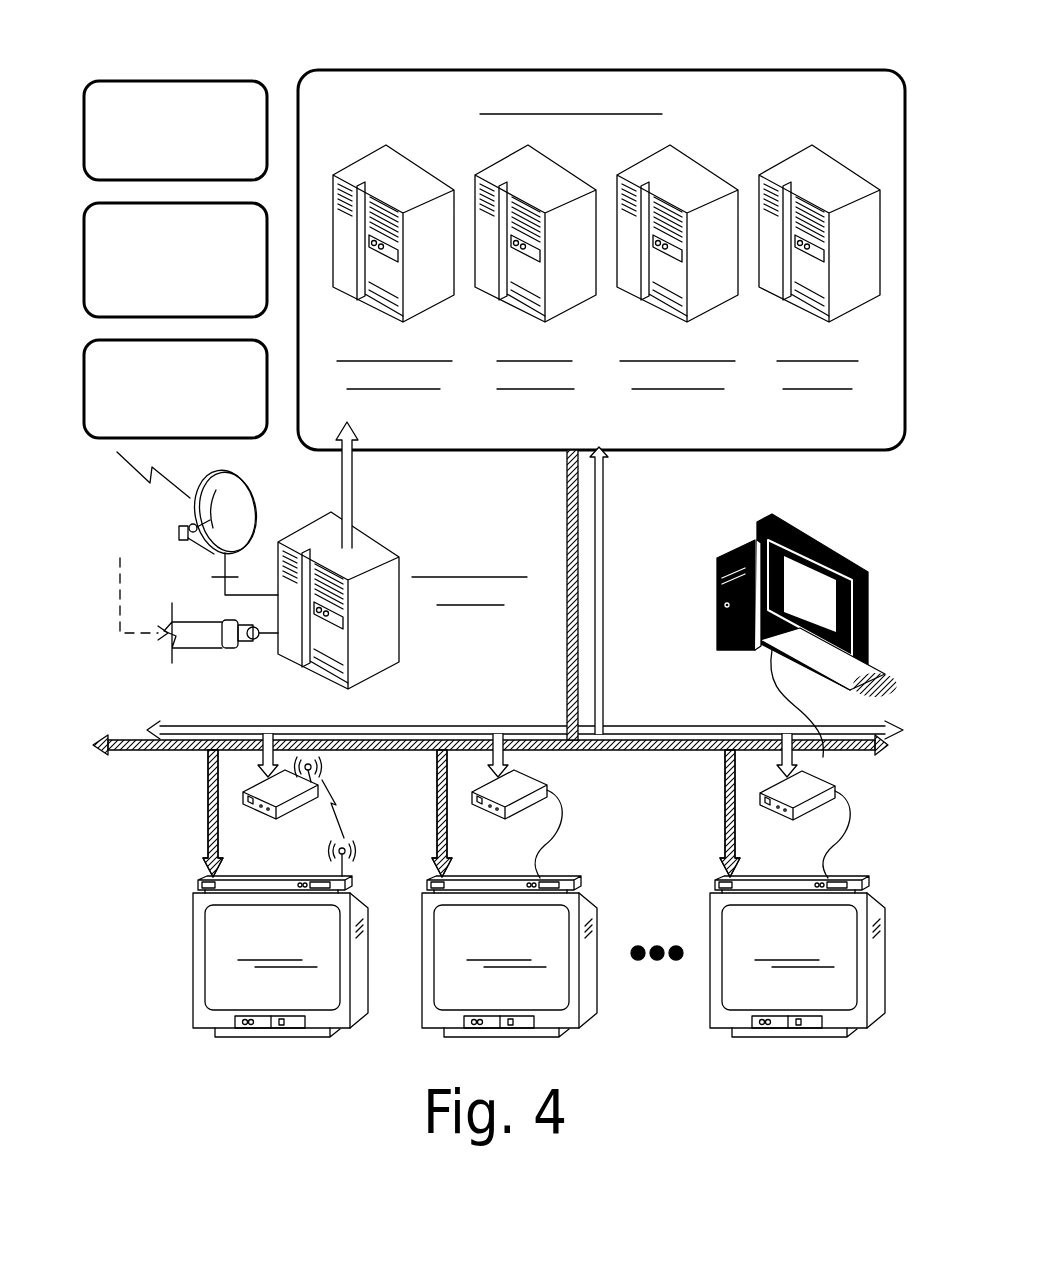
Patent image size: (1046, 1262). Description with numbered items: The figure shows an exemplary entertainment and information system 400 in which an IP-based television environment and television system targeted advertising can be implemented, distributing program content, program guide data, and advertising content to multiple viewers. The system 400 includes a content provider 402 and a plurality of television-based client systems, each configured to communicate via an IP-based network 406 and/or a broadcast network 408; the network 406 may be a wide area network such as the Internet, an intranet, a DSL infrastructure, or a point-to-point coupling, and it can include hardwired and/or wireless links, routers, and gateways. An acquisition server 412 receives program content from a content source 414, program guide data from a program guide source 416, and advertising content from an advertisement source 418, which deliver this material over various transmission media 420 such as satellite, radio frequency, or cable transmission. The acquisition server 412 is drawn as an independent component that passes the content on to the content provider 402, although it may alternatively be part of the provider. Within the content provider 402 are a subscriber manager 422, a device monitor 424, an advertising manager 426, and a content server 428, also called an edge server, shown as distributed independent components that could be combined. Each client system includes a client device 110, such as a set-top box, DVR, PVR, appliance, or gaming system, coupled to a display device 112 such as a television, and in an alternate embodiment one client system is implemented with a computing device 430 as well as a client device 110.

The entertainment and information system 400 is at (268, 56).
The content provider 402 is at (720, 114).
The IP-based network 406 is at (427, 727).
The broadcast network 408 is at (567, 530).
The acquisition server 412 is at (490, 633).
The content source 414 is at (193, 162).
The program guide source 416 is at (193, 302).
The advertisement source 418 is at (193, 427).
The transmission media 420 is at (190, 667).
The subscriber manager 422 is at (413, 417).
The device monitor 424 is at (555, 417).
The advertising manager 426 is at (697, 417).
The content server 428 is at (836, 417).
The computing device 430 is at (738, 550).
The client device 110 is at (200, 876).
The display device 112 is at (190, 925).